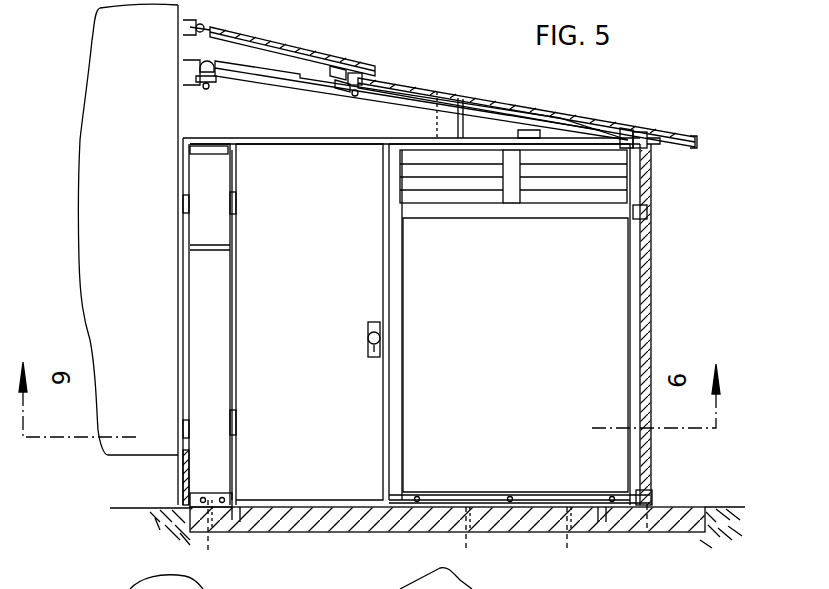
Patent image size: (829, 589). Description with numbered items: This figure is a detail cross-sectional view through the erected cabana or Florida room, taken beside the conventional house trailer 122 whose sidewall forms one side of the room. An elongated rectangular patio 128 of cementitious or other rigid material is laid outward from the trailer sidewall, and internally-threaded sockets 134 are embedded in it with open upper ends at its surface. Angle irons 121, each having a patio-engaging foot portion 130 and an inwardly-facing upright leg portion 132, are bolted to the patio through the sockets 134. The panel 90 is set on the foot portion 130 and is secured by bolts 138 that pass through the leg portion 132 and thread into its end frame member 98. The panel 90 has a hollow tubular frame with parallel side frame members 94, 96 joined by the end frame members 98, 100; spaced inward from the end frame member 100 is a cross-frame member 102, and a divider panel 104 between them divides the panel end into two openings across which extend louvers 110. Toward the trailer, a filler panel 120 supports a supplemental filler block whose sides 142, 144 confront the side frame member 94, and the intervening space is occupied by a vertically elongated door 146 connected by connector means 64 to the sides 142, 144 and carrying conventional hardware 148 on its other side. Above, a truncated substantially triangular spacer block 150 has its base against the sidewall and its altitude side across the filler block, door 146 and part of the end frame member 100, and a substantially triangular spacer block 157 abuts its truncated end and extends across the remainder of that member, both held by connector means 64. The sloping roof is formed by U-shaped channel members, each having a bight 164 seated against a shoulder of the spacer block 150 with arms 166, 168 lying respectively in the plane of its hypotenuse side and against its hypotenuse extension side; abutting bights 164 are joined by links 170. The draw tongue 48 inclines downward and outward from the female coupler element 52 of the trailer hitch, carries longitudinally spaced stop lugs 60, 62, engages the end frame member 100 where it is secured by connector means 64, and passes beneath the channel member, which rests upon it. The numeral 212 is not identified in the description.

The draw tongue 48 is at (272, 82).
The female coupler element 52 is at (206, 62).
The stop lug 60 is at (518, 134).
The stop lug 62 is at (355, 96).
The connector means 64 is at (560, 130).
The panel 90 is at (618, 292).
The side frame member 94 is at (405, 370).
The side frame member 96 is at (633, 360).
The end frame member 98 is at (515, 355).
The end frame member 100 is at (480, 140).
The cross-frame member 102 is at (478, 216).
The divider panel 104 is at (510, 206).
The louvers 110 is at (422, 207).
The filler panel 120 is at (188, 362).
The angle iron 121 is at (211, 489).
The house trailer 122 is at (76, 233).
The patio 128 is at (300, 518).
The foot portion 130 is at (234, 518).
The leg portion 132 is at (235, 500).
The internally-threaded socket 134 is at (208, 552).
The bolt 138 is at (417, 494).
The side 142 is at (238, 228).
The side 144 is at (237, 365).
The door 146 is at (341, 272).
The hardware 148 is at (364, 352).
The truncated substantially triangular spacer block 150 is at (318, 138).
The substantially triangular spacer block 157 is at (465, 125).
The bight 164 is at (328, 78).
The arm 166 is at (358, 72).
The arm 168 is at (340, 90).
The link 170 is at (332, 65).
The adjacent structure 212 is at (301, 578).